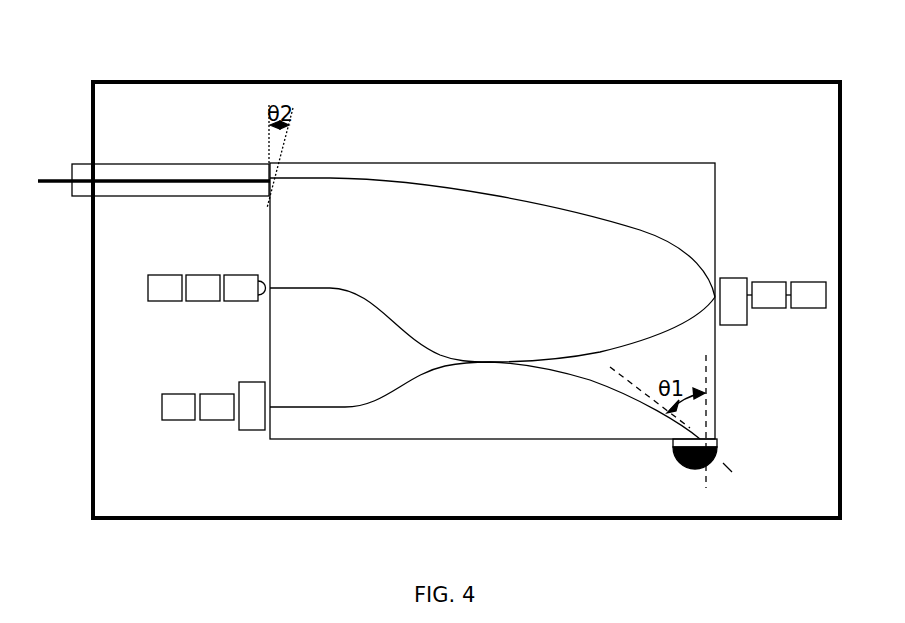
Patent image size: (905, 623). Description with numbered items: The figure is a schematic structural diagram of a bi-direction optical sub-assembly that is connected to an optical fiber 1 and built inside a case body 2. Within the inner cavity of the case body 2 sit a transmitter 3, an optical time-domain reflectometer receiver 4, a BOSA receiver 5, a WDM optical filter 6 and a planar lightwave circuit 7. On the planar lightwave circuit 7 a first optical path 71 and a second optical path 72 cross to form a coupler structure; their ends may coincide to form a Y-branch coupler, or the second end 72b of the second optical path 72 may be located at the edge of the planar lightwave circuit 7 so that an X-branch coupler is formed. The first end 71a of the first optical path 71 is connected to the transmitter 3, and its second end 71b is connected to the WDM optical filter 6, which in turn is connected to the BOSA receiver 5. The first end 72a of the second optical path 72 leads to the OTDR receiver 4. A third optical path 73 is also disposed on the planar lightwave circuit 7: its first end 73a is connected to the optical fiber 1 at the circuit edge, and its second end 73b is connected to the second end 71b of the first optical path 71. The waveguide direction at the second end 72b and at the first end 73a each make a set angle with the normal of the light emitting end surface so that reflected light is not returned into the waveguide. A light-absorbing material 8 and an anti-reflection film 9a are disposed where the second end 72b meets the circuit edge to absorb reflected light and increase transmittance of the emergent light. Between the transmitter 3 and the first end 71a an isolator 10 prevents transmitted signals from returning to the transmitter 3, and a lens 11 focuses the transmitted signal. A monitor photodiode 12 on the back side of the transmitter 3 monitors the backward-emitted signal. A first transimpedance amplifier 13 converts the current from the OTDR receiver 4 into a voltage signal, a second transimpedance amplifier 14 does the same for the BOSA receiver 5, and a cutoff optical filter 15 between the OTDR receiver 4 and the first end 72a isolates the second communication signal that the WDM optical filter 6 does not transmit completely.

The optical fiber 1 is at (132, 167).
The case body 2 is at (602, 82).
The transmitter 3 is at (200, 276).
The optical time-domain reflectometer (OTDR) receiver 4 is at (210, 413).
The bi-direction optical sub-assembly (BOSA) receiver 5 is at (771, 283).
The wavelength division multiplexing (WDM) optical filter 6 is at (740, 283).
The planar lightwave circuit (PLC) 7 is at (668, 167).
The light-absorbing material 8 is at (683, 470).
The anti-reflection film 9a is at (718, 440).
The isolator 10 is at (240, 302).
The lens 11 is at (268, 285).
The monitor photodiode (MPD) 12 is at (150, 278).
The first transimpedance amplifier (TIA) 13 is at (170, 413).
The second transimpedance amplifier (TIA) 14 is at (818, 296).
The cutoff optical filter 15 is at (250, 423).
The first optical path 71 is at (492, 325).
The first end of the first optical path 71a is at (300, 309).
The second end of the first optical path 71b is at (692, 348).
The second optical path 72 is at (485, 400).
The first end of the second optical path 72a is at (300, 426).
The second end of the second optical path 72b is at (638, 431).
The third optical path 73 is at (492, 237).
The first end of the third optical path 73a is at (305, 199).
The second end of the third optical path 73b is at (678, 281).